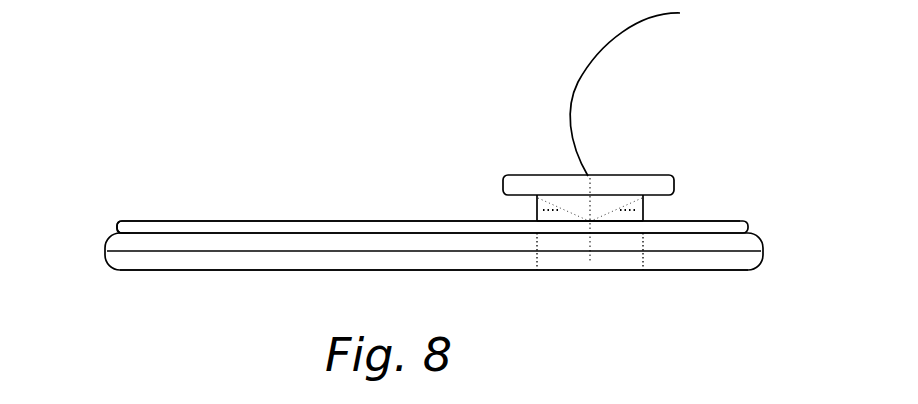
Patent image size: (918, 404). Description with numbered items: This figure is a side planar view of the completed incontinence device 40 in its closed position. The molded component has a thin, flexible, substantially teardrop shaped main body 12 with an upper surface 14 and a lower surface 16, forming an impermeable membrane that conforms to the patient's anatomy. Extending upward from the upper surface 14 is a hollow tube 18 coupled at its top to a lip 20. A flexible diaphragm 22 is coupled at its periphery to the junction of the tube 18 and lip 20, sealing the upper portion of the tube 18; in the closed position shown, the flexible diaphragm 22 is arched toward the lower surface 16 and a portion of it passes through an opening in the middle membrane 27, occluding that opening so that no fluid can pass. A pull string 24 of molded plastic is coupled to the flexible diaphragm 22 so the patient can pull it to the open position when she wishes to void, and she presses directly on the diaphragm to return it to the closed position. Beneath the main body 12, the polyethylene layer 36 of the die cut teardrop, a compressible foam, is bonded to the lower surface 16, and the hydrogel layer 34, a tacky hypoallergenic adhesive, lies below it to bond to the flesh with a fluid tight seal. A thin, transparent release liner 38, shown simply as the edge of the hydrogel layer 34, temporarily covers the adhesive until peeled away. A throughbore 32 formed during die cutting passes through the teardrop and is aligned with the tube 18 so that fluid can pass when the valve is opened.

The main body 12 is at (188, 232).
The upper surface 14 is at (257, 220).
The lower surface 16 is at (143, 222).
The hollow tube 18 is at (645, 209).
The lip 20 is at (678, 186).
The flexible diaphragm 22 is at (603, 217).
The pull string 24 is at (636, 25).
The middle membrane 27 is at (537, 210).
The throughbore 32 is at (586, 250).
The hydrogel layer 34 is at (757, 265).
The polyethylene layer 36 is at (745, 245).
The release liner 38 is at (188, 271).
The incontinence device 40 is at (158, 142).